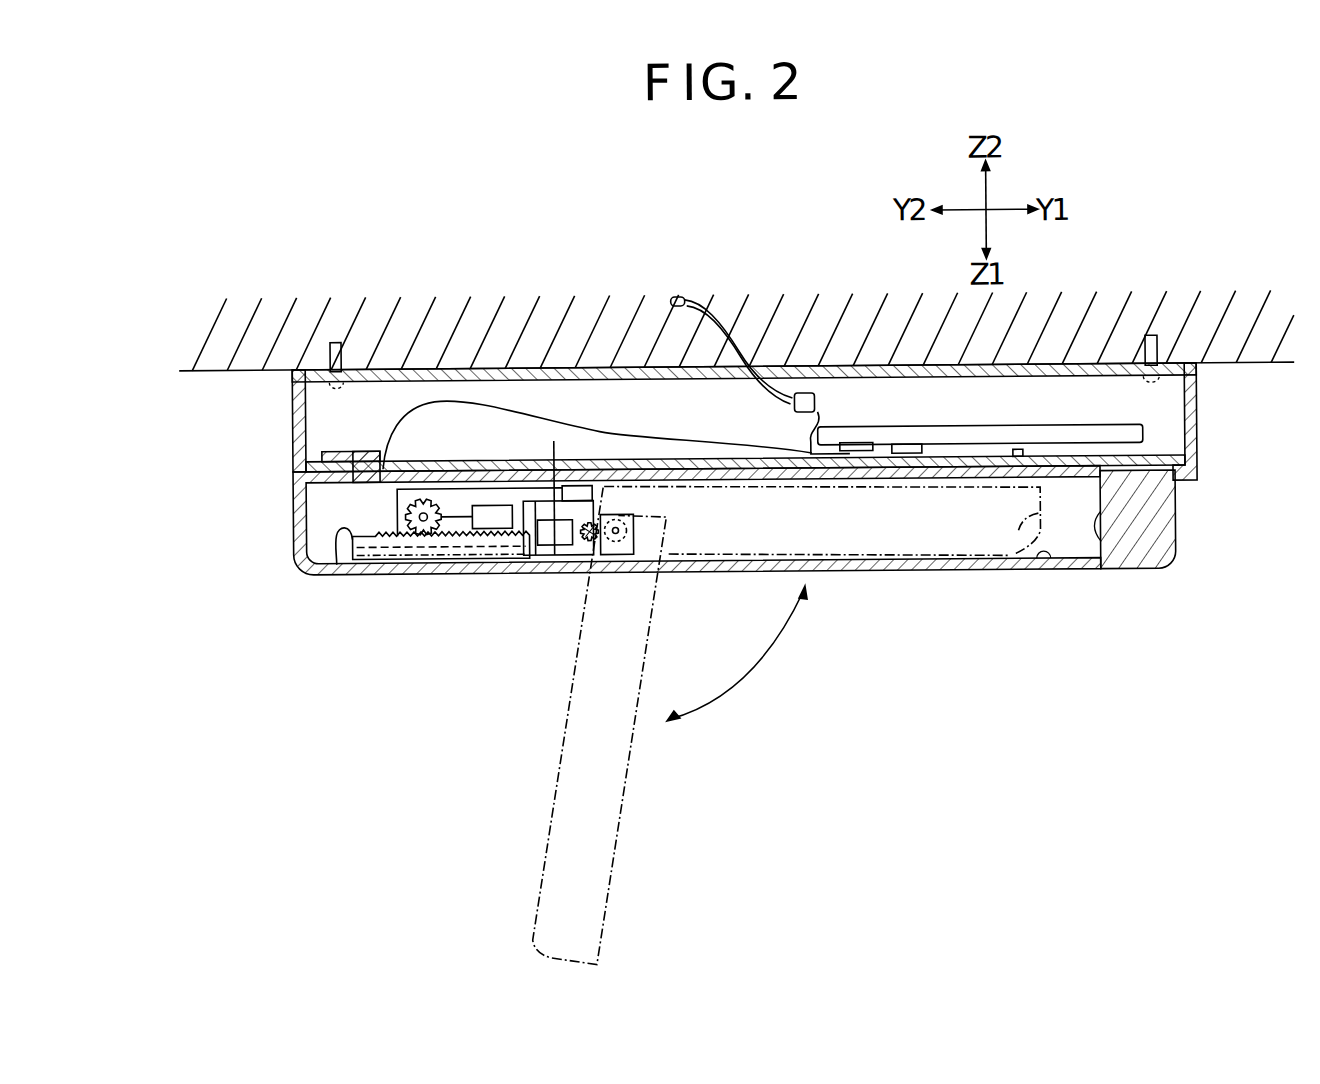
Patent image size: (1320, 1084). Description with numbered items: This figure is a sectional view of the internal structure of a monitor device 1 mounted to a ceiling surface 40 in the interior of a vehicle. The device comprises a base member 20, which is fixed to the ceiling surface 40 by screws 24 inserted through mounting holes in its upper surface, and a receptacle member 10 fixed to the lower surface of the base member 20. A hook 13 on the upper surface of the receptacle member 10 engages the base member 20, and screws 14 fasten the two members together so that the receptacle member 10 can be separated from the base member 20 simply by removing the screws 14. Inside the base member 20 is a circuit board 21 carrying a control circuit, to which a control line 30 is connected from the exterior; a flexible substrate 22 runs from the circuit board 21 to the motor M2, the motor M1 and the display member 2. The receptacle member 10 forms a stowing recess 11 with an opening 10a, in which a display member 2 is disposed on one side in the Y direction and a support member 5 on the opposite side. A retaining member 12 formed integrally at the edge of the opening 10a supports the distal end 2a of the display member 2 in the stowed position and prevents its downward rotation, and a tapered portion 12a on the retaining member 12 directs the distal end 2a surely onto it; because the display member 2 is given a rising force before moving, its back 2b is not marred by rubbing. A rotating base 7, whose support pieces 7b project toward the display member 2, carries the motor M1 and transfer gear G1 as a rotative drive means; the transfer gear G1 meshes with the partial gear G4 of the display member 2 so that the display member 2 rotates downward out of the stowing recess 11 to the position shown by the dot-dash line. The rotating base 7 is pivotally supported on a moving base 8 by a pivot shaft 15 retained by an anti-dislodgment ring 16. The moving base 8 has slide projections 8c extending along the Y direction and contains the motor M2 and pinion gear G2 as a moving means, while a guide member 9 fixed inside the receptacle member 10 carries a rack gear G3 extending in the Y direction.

The monitor device 1 is at (910, 582).
The display member 2 is at (619, 801).
The distal end of display member 2a is at (1012, 567).
The back of display member 2b is at (950, 570).
The support member 5 is at (527, 560).
The rotating base 7 is at (540, 560).
The support pieces 7b is at (606, 560).
The moving base 8 is at (472, 490).
The slide projections 8c is at (418, 566).
The guide member 9 is at (337, 566).
The receptacle member 10 is at (293, 500).
The opening 10a is at (875, 575).
The stowing recess 11 is at (1097, 552).
The retaining member 12 is at (1067, 566).
The tapered portion 12a is at (1038, 568).
The hook 13 is at (733, 402).
The screws 14 is at (1018, 455).
The pivot shaft 15 is at (556, 535).
The anti-dislodgment ring 16 is at (547, 488).
The base member 20 is at (293, 407).
The circuit board 21 is at (1074, 431).
The flexible substrate 22 is at (688, 444).
The screws 24 is at (336, 343).
The control line 30 is at (716, 299).
The ceiling surface 40 is at (450, 370).
The transfer gear G1 is at (572, 560).
The pinion gear G2 is at (424, 500).
The rack gear G3 is at (382, 537).
The partial gear G4 is at (620, 520).
The motor M1 is at (554, 532).
The motor M2 is at (476, 517).